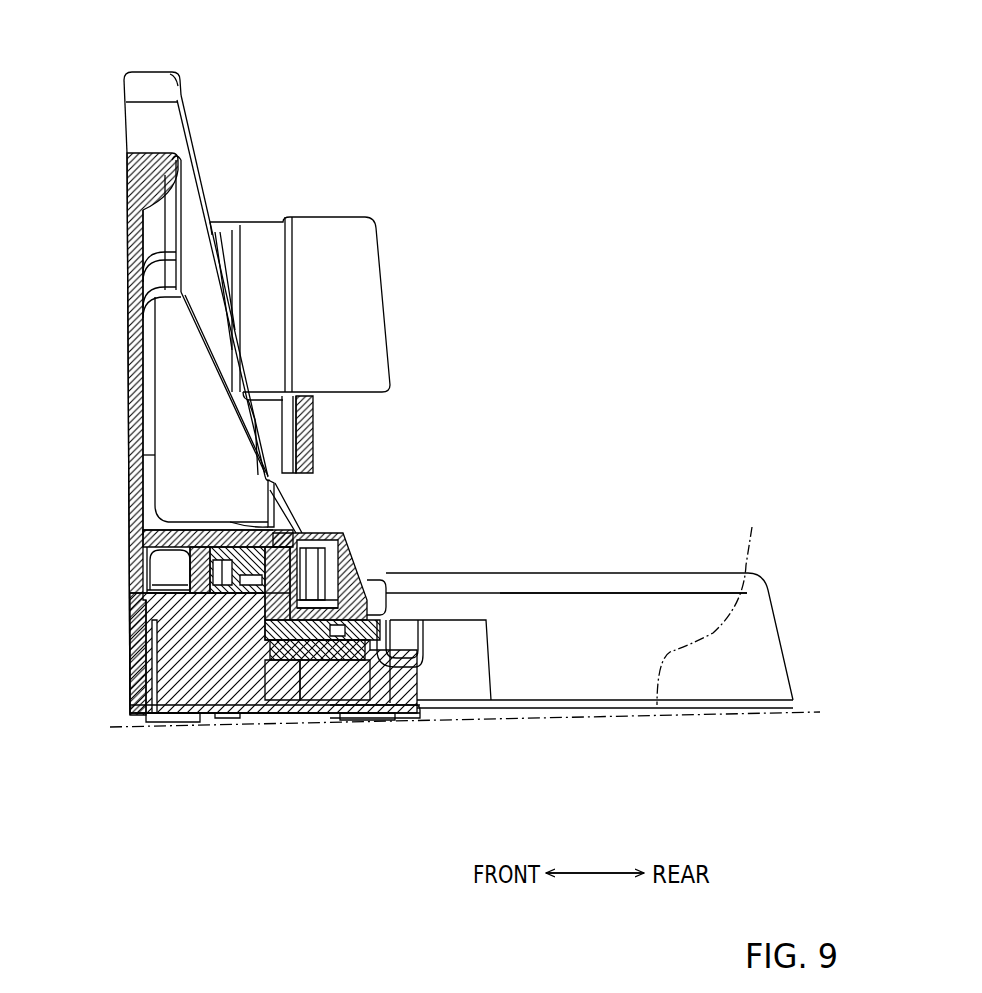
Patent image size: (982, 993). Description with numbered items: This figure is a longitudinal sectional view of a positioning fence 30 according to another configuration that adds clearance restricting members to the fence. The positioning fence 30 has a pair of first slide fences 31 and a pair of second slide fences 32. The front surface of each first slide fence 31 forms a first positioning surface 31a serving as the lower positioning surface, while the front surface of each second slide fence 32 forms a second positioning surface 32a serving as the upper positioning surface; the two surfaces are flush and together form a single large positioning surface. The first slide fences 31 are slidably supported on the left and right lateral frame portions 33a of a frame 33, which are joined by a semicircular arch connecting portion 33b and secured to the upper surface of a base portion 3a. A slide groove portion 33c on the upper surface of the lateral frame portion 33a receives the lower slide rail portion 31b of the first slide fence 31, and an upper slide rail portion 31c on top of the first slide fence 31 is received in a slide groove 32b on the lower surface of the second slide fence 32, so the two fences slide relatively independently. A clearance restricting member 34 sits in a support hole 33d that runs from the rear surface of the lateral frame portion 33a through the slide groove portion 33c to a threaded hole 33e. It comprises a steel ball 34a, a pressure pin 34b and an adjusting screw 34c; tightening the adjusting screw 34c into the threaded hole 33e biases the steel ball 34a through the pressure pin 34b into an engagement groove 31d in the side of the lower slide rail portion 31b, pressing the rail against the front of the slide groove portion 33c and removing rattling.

The positioning fence 30 is at (115, 82).
The first slide fence 31 is at (140, 668).
The first positioning surface 31a is at (130, 637).
The lower slide rail portion 31b is at (245, 722).
The upper slide rail portion 31c is at (292, 505).
The engagement groove 31d is at (265, 522).
The second slide fence 32 is at (128, 447).
The second positioning surface 32a is at (127, 362).
The slide groove 32b is at (343, 530).
The frame 33 is at (560, 546).
The lateral frame portion 33a is at (160, 722).
The semicircular arch connecting portion 33b is at (615, 612).
The slide groove portion 33c is at (130, 575).
The support hole 33d is at (345, 568).
The threaded hole 33e is at (370, 718).
The clearance restricting member 34 is at (460, 620).
The steel ball 34a is at (270, 720).
The pressure pin 34b is at (325, 720).
The adjusting screw 34c is at (405, 720).
The base portion 3a is at (752, 540).